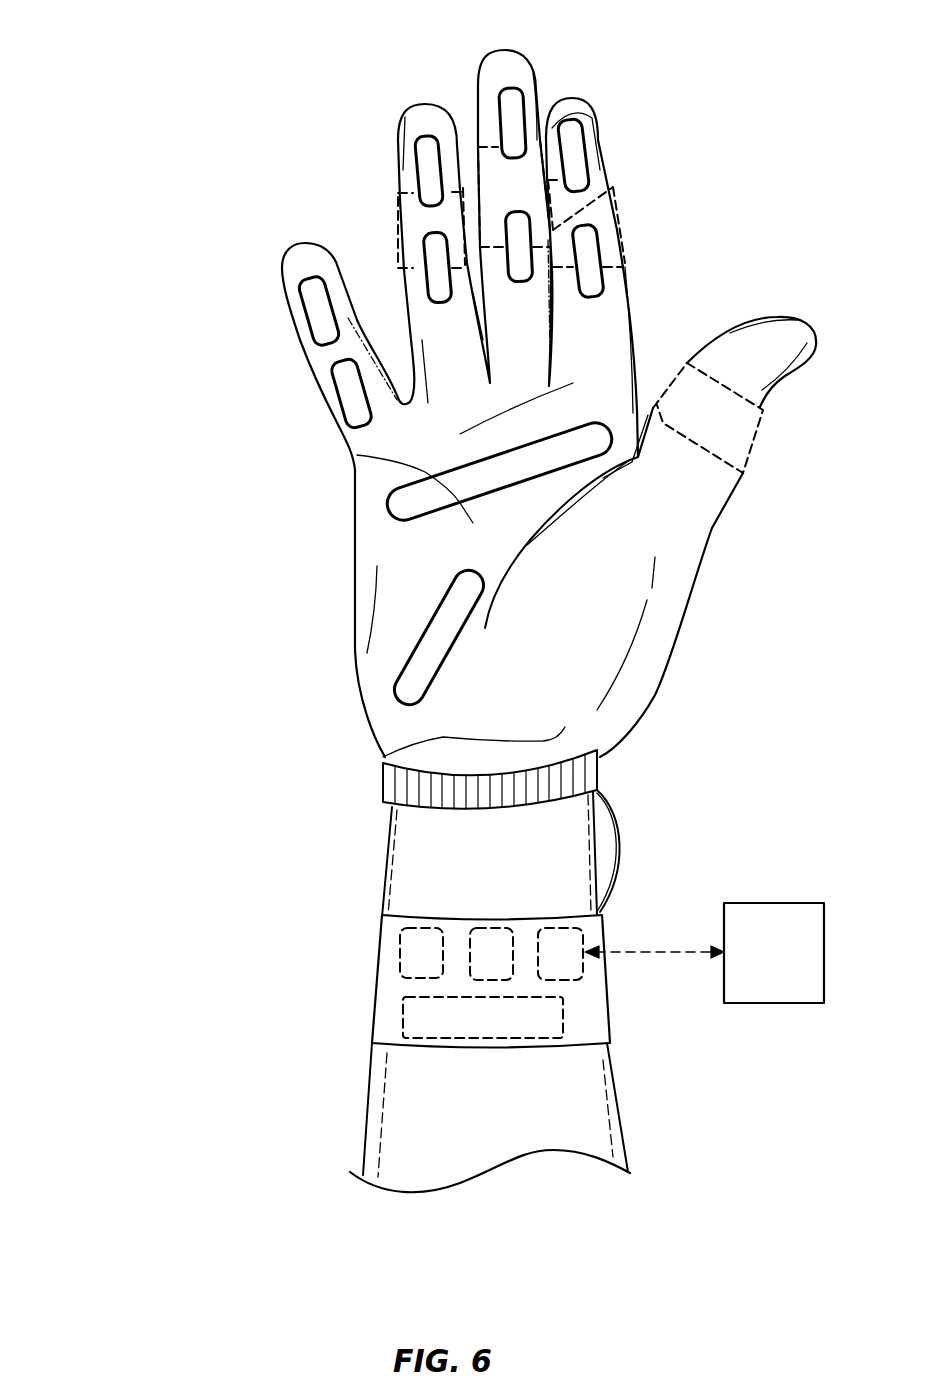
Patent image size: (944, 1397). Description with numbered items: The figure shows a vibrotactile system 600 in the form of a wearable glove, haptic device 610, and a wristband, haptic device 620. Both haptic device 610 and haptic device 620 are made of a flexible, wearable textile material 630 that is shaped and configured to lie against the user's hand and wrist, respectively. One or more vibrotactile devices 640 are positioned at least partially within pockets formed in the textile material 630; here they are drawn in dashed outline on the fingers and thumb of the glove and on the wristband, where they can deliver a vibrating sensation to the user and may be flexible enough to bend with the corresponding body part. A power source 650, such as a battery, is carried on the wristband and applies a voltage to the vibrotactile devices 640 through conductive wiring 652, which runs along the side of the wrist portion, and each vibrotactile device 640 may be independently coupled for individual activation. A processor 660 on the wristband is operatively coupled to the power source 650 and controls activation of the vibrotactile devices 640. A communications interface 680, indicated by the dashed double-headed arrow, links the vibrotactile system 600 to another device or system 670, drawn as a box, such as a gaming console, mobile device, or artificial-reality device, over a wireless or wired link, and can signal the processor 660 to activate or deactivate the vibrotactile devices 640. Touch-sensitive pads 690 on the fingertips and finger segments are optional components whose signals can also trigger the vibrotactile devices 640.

The vibrotactile system 600 is at (150, 84).
The haptic device 610 is at (625, 690).
The haptic device 620 is at (592, 1018).
The textile material 630 is at (390, 727).
The vibrotactile device 640 is at (618, 184).
The power source 650 is at (397, 970).
The conductive wiring 652 is at (615, 830).
The processor 660 is at (500, 922).
The other device or system 670 is at (757, 964).
The communications interface 680 is at (611, 986).
The touch-sensitive pad 690 is at (423, 137).